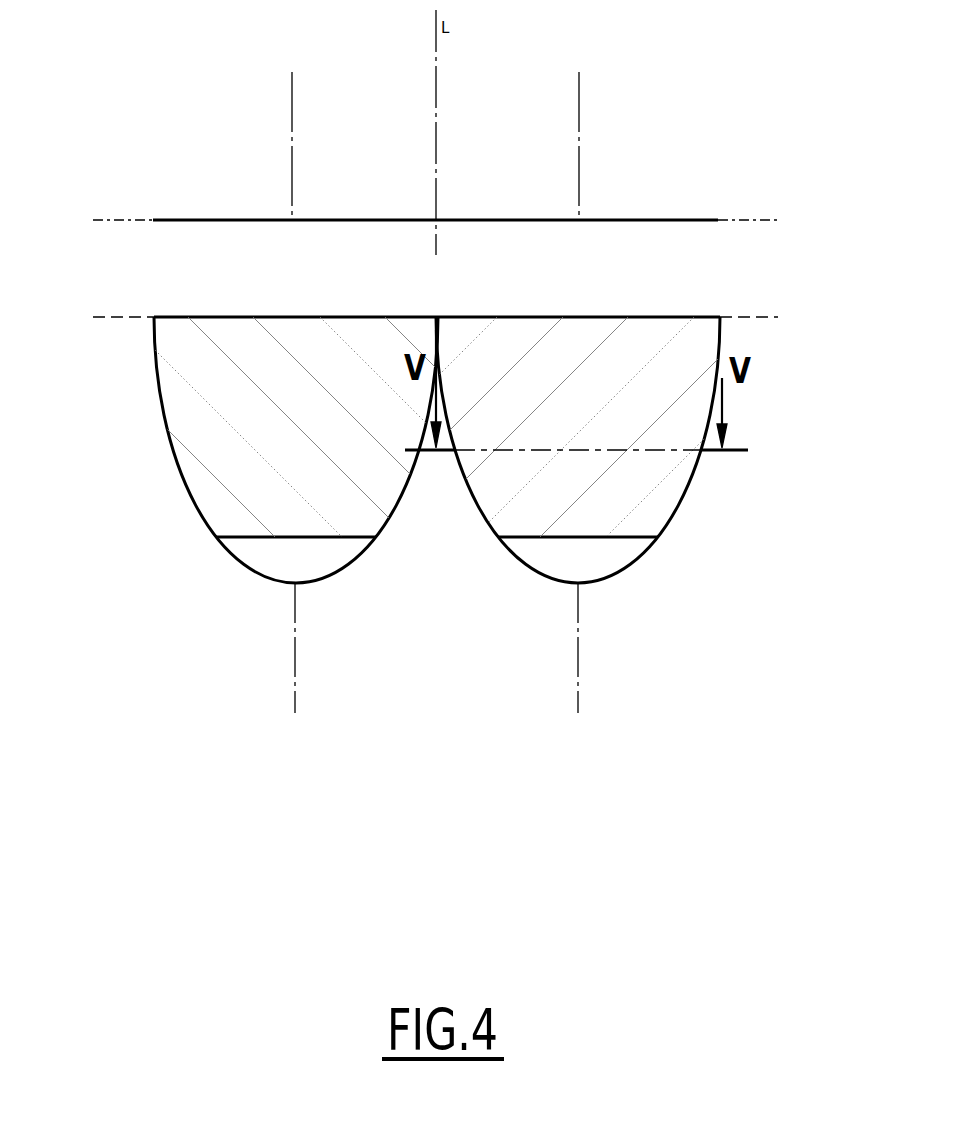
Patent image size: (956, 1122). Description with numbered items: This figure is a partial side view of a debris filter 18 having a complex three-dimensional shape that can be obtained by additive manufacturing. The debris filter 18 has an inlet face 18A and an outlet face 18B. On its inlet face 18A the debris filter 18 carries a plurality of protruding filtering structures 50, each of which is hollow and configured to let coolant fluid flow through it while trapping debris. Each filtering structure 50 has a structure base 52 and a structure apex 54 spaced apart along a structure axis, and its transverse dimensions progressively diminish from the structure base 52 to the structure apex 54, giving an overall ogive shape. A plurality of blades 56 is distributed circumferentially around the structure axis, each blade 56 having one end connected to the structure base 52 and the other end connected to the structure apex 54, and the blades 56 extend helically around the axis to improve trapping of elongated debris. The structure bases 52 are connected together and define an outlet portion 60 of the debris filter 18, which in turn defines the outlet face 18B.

The debris filter 18 is at (435, 160).
The inlet face 18A is at (435, 500).
The outlet face 18B is at (663, 220).
The filtering structure 50 is at (177, 522).
The structure base 52 is at (175, 287).
The structure apex 54 is at (273, 556).
The blade 56 is at (225, 465).
The outlet portion 60 is at (355, 248).